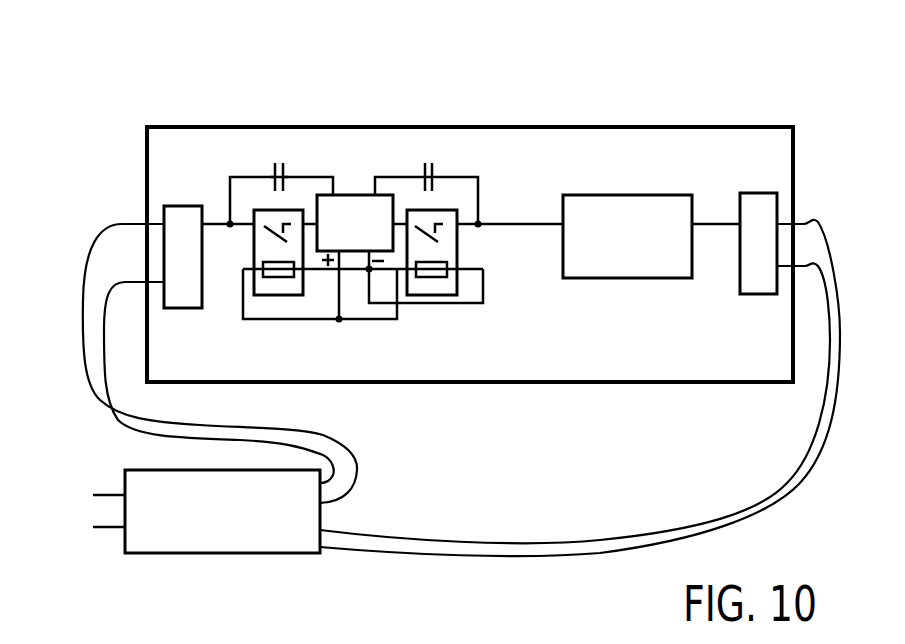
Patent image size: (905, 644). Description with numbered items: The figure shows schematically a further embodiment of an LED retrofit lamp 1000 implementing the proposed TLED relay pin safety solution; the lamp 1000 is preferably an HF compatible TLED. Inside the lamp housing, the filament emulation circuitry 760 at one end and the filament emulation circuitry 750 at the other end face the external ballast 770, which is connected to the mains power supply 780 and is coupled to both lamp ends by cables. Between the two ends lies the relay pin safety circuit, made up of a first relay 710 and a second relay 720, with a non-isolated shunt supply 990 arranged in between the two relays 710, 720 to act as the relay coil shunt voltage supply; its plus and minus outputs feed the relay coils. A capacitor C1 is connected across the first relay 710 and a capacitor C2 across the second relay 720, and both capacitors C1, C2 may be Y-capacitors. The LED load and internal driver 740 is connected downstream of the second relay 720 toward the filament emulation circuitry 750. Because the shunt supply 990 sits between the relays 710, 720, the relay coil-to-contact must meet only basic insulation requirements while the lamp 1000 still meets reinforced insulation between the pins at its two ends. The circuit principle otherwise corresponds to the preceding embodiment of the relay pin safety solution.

The LED lamp 1000 is at (666, 102).
The filament emulation circuitry 760 is at (182, 206).
The non-isolated shunt supply 990 is at (355, 195).
The first relay 710 is at (253, 240).
The second relay 720 is at (427, 295).
The LED load and internal driver 740 is at (592, 195).
The filament emulation circuitry 750 is at (757, 193).
The ballast 770 is at (223, 553).
The mains power supply 780 is at (100, 510).
The capacitor C1 is at (279, 161).
The capacitor C2 is at (429, 161).